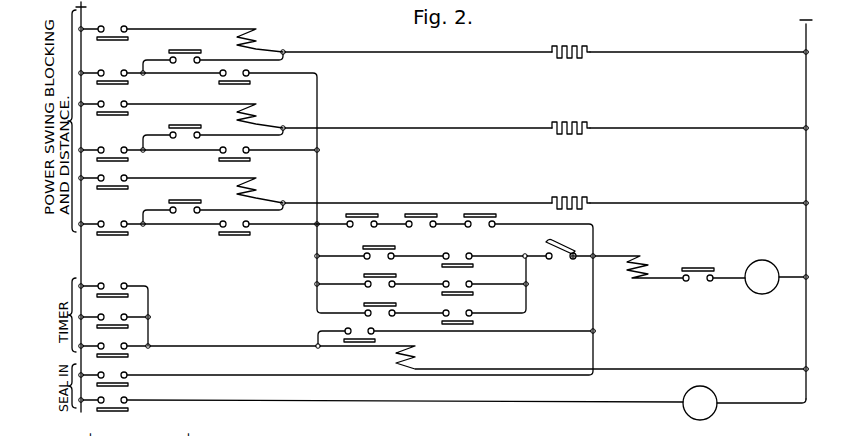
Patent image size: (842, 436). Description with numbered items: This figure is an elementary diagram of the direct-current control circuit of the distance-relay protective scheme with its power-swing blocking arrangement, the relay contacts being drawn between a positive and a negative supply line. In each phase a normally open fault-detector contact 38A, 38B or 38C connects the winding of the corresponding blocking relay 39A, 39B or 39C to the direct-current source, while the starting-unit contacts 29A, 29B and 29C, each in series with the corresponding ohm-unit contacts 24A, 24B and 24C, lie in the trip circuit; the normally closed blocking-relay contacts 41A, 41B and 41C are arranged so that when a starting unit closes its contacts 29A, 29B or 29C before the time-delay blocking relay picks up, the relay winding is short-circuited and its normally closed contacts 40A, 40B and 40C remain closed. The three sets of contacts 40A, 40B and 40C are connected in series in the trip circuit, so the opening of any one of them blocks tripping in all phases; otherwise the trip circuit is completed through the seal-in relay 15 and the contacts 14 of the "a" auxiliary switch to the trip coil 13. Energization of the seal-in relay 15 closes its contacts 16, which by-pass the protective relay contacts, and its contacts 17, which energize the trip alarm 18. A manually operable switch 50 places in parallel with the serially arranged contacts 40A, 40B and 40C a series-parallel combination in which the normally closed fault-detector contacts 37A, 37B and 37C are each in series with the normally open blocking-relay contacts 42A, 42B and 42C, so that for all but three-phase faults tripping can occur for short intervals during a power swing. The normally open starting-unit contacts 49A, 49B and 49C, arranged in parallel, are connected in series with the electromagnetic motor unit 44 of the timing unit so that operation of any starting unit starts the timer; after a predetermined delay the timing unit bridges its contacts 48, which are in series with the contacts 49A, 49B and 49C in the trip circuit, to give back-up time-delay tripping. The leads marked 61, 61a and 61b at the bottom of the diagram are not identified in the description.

The normally open contacts 38A is at (104, 26).
The normally open contacts 38B is at (127, 103).
The normally open contacts 38C is at (127, 177).
The contacts 29A is at (109, 66).
The contacts 29B is at (110, 143).
The contacts 29C is at (104, 221).
The normally closed contacts 41A is at (173, 55).
The normally closed contacts 41B is at (173, 130).
The normally closed contacts 41C is at (176, 205).
The blocking relay 39A is at (257, 41).
The blocking relay 39B is at (257, 116).
The blocking relay 39C is at (257, 191).
The contacts 24A is at (250, 76).
The contacts 24B is at (250, 153).
The contacts 24C is at (250, 228).
The normally closed contacts 40A is at (370, 228).
The normally closed contacts 40B is at (430, 228).
The normally closed contacts 40C is at (492, 228).
The normally closed contacts 37A is at (377, 259).
The normally closed contacts 37B is at (379, 289).
The normally closed contacts 37C is at (397, 310).
The normally open contacts 42A is at (449, 253).
The normally open contacts 42B is at (473, 282).
The normally open contacts 42C is at (473, 312).
The contacts 48 is at (348, 329).
The electromagnetic motor unit 44 is at (412, 361).
The normally open contacts 49A is at (104, 284).
The normally open contacts 49B is at (122, 315).
The normally open contacts 49C is at (122, 345).
The contacts 16 is at (128, 373).
The normally open contacts 17 is at (128, 398).
The manually operable switch 50 is at (570, 260).
The seal-in relay 15 is at (641, 257).
The contacts 14 is at (689, 281).
The trip coil 13 is at (750, 263).
The alarm 18 is at (715, 397).
The bus 61 is at (208, 432).
The bus conductor 61a is at (162, 432).
The bus conductor 61b is at (125, 432).